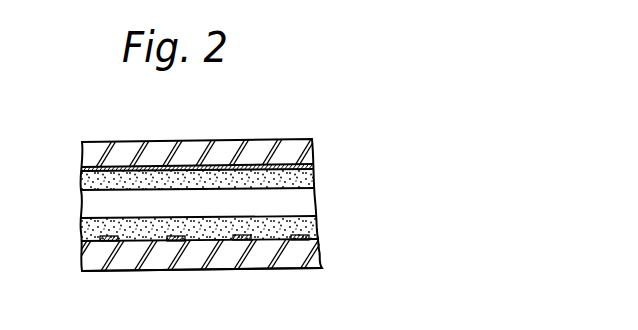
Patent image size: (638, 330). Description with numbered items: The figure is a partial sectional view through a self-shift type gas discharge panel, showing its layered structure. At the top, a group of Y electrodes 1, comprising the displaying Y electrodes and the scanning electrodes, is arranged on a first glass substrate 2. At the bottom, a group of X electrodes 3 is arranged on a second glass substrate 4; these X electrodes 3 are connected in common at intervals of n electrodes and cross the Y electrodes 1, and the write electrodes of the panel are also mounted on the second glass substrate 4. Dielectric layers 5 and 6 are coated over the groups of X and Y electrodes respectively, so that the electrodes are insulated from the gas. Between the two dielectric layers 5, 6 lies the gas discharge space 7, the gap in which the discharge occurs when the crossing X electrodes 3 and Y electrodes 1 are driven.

The Y electrodes 1 is at (314, 167).
The first glass substrate 2 is at (277, 148).
The X electrodes 3 is at (318, 233).
The second glass substrate 4 is at (305, 258).
The dielectric layer 5 is at (83, 177).
The dielectric layer 6 is at (83, 230).
The gas discharge space 7 is at (308, 205).